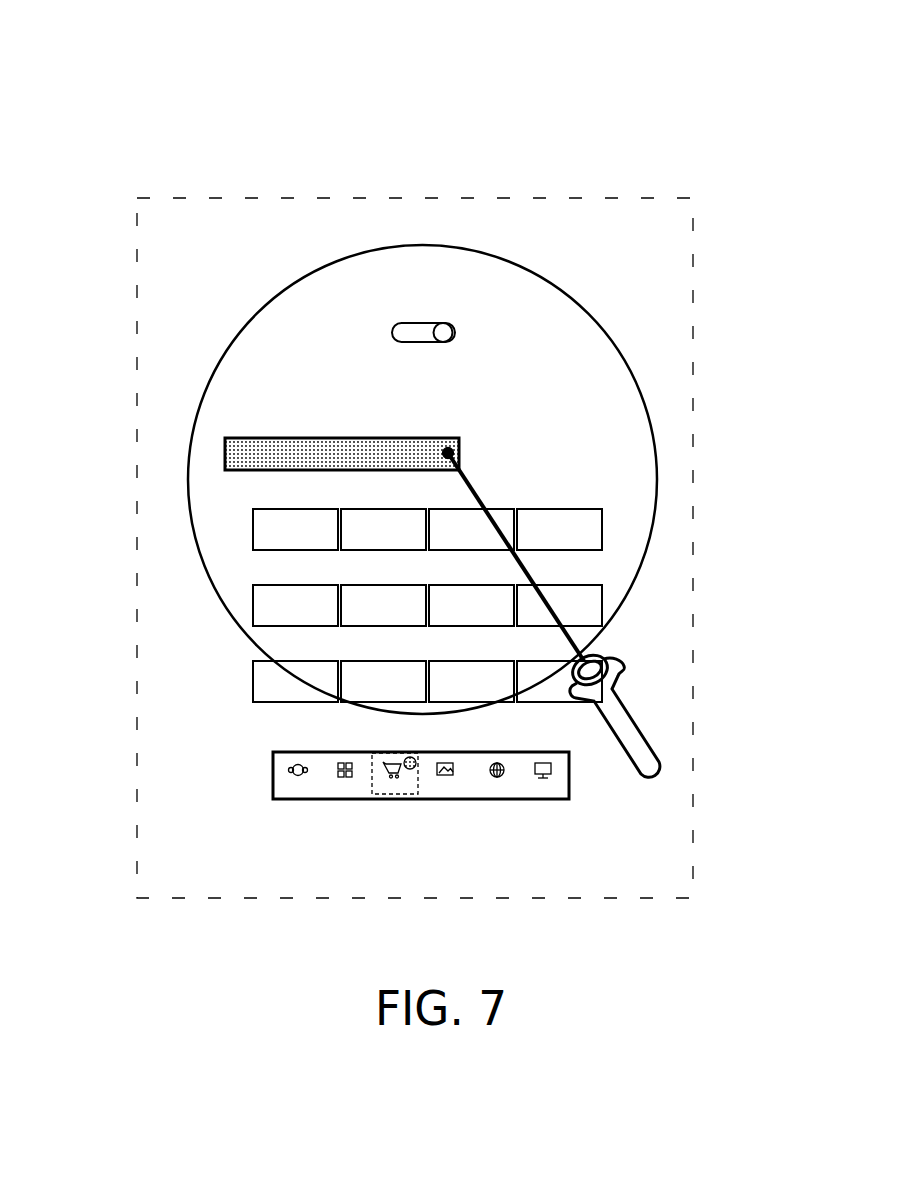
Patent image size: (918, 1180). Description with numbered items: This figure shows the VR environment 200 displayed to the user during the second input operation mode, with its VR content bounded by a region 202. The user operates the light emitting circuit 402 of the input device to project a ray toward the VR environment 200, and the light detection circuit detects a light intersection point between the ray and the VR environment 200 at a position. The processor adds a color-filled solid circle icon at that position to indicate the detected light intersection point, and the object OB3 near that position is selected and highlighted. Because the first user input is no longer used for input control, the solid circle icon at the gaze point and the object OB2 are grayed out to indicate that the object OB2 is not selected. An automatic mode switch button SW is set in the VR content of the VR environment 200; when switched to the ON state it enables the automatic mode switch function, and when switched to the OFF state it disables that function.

The VR environment 200 is at (704, 86).
The display area 202 is at (543, 197).
The automatic mode switch button SW is at (430, 322).
The object OB3 is at (225, 440).
The object OB2 is at (380, 752).
The light emitting circuit 402 is at (628, 745).